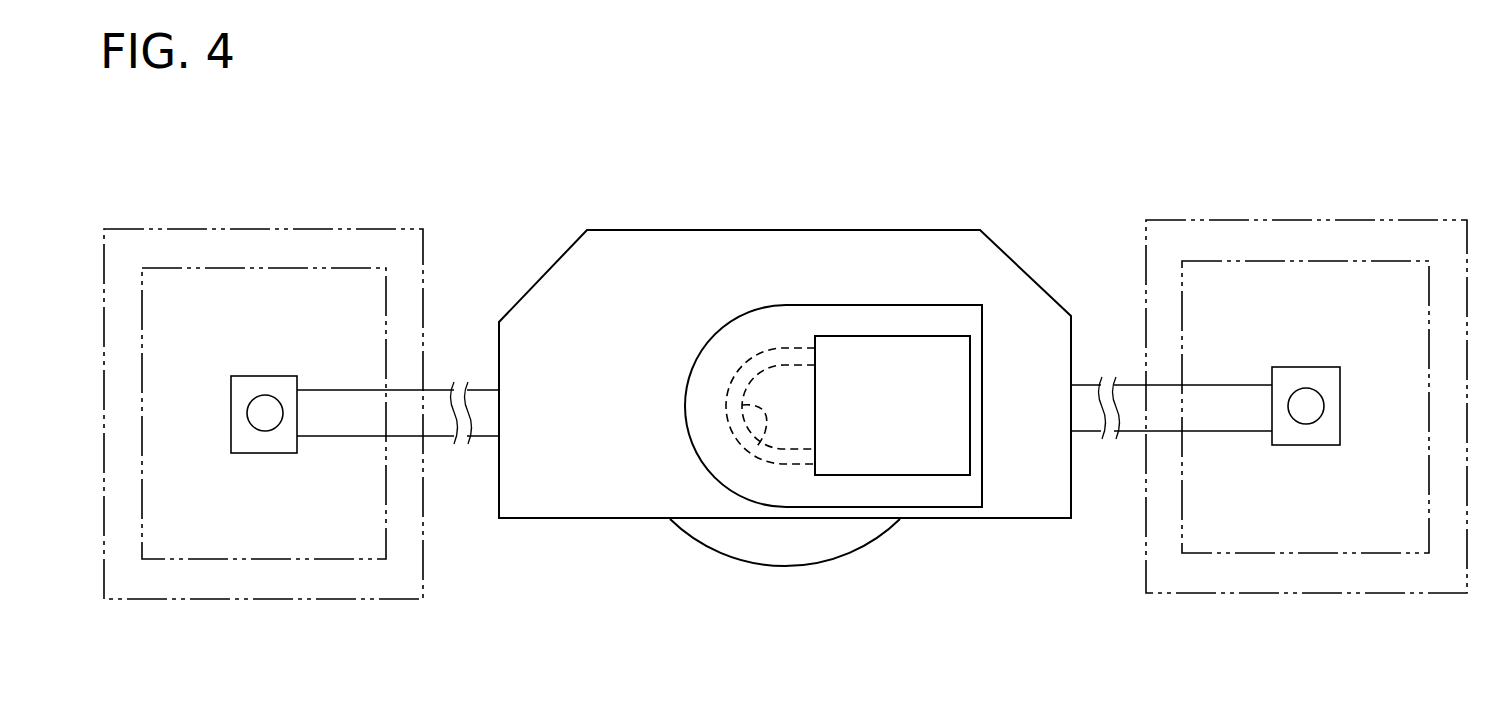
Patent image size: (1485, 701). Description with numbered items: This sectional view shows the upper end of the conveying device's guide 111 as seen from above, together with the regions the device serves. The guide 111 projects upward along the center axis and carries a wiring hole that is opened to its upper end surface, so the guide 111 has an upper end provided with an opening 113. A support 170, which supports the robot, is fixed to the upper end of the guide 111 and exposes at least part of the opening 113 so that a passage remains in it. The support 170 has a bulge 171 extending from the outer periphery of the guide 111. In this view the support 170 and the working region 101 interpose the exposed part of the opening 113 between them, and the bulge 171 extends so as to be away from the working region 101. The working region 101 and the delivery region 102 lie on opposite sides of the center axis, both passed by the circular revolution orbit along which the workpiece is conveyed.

The working region 101 is at (258, 229).
The delivery region 102 is at (1291, 220).
The guide 111 is at (780, 346).
The opening 113 is at (762, 437).
The support 170 is at (828, 423).
The bulge 171 is at (950, 389).